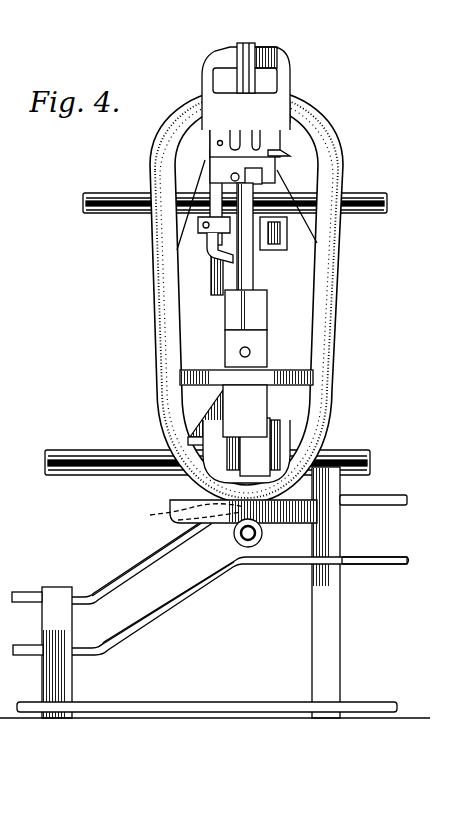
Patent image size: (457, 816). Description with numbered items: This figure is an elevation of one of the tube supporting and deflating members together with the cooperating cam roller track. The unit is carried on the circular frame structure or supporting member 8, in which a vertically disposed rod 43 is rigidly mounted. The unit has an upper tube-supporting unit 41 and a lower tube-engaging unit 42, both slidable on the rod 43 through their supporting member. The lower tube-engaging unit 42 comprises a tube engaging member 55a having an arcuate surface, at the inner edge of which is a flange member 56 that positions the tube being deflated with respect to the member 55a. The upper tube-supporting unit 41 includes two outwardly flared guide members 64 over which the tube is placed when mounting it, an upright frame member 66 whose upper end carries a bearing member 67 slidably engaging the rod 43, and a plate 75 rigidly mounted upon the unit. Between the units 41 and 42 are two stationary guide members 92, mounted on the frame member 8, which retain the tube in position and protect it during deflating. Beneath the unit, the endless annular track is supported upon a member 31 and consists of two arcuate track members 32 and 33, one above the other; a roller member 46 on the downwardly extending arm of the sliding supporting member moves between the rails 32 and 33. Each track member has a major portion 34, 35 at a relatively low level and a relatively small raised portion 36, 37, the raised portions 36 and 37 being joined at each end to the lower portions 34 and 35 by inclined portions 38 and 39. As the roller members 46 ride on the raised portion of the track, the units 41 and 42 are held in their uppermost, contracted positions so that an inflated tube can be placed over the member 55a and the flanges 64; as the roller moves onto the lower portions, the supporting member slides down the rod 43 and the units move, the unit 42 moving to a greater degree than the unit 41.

The supporting member 8 is at (370, 213).
The member 31 is at (330, 662).
The arcuate track member 32 is at (186, 538).
The arcuate track member 33 is at (213, 577).
The major portion 34 is at (35, 591).
The major portion 35 is at (28, 645).
The raised portion 36 is at (402, 497).
The raised portion 37 is at (393, 565).
The inclined portion 38 is at (109, 567).
The inclined portion 39 is at (126, 620).
The upper tube-supporting unit 41 is at (295, 119).
The lower tube-engaging unit 42 is at (181, 433).
The vertically disposed rod 43 is at (249, 44).
The roller member 46 is at (266, 535).
The tube engaging member 55a is at (215, 479).
The flange member 56 is at (186, 514).
The outwardly flared guide member 64 is at (166, 160).
The upright frame member 66 is at (278, 60).
The bearing member 67 is at (253, 50).
The plate 75 is at (269, 158).
The stationary guide member 92 is at (161, 310).